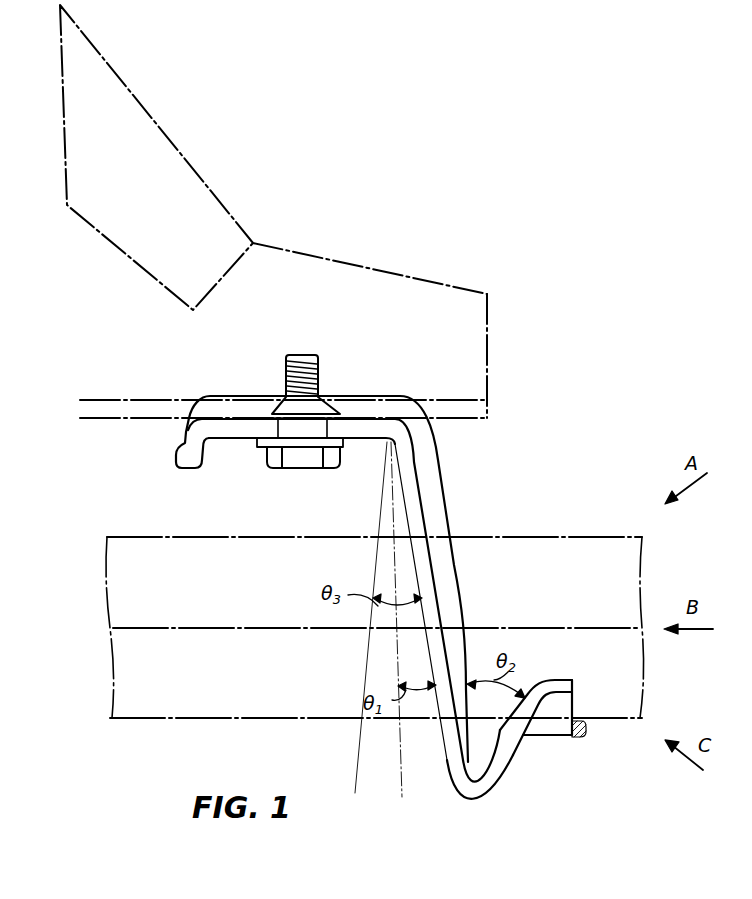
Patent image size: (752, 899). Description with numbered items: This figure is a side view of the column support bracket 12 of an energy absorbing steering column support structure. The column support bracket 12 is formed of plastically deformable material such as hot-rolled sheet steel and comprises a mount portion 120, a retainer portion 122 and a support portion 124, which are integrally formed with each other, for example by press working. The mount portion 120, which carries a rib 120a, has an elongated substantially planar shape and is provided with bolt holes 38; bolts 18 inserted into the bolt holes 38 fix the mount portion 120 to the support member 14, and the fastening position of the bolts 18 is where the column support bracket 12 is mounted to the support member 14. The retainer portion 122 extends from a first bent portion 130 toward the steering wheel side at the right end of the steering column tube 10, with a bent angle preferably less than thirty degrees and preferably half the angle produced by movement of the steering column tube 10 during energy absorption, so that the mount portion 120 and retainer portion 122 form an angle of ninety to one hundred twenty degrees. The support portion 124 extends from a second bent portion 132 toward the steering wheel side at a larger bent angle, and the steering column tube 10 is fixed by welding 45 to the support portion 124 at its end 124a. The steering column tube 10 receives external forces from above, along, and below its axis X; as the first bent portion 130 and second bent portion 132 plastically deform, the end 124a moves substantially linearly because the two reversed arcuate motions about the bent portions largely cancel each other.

The steering column tube 10 is at (518, 535).
The column support bracket 12 is at (216, 384).
The support member 14 is at (188, 168).
The bolts 18 is at (298, 459).
The bolt holes 38 is at (272, 421).
The welding 45 is at (585, 733).
The mount portion 120 is at (360, 428).
The rib 120a is at (396, 408).
The retainer portion 122 is at (428, 578).
The support portion 124 is at (502, 773).
The end 124a is at (553, 728).
The first bent portion 130 is at (514, 356).
The second bent portion 132 is at (472, 788).
The axis X is at (163, 632).